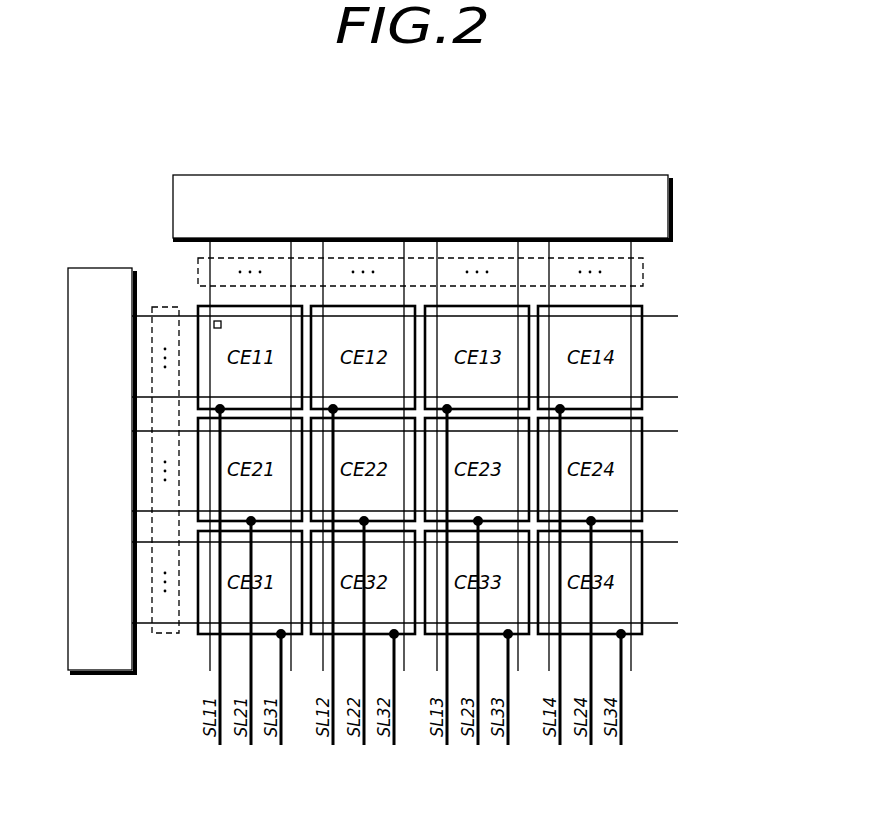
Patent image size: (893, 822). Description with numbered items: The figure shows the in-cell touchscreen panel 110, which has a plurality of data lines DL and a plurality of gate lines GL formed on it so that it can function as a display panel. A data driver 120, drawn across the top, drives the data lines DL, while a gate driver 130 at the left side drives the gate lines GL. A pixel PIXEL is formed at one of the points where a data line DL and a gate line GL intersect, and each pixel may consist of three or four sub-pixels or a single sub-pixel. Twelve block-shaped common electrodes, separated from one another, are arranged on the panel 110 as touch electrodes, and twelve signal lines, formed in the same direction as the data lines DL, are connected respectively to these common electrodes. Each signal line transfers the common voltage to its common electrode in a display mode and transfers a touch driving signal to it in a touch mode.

The in-cell touchscreen panel 110 is at (684, 301).
The data driver 120 is at (440, 218).
The gate driver 130 is at (84, 459).
The data lines DL is at (644, 262).
The gate lines GL is at (167, 635).
The pixel PIXEL is at (219, 320).